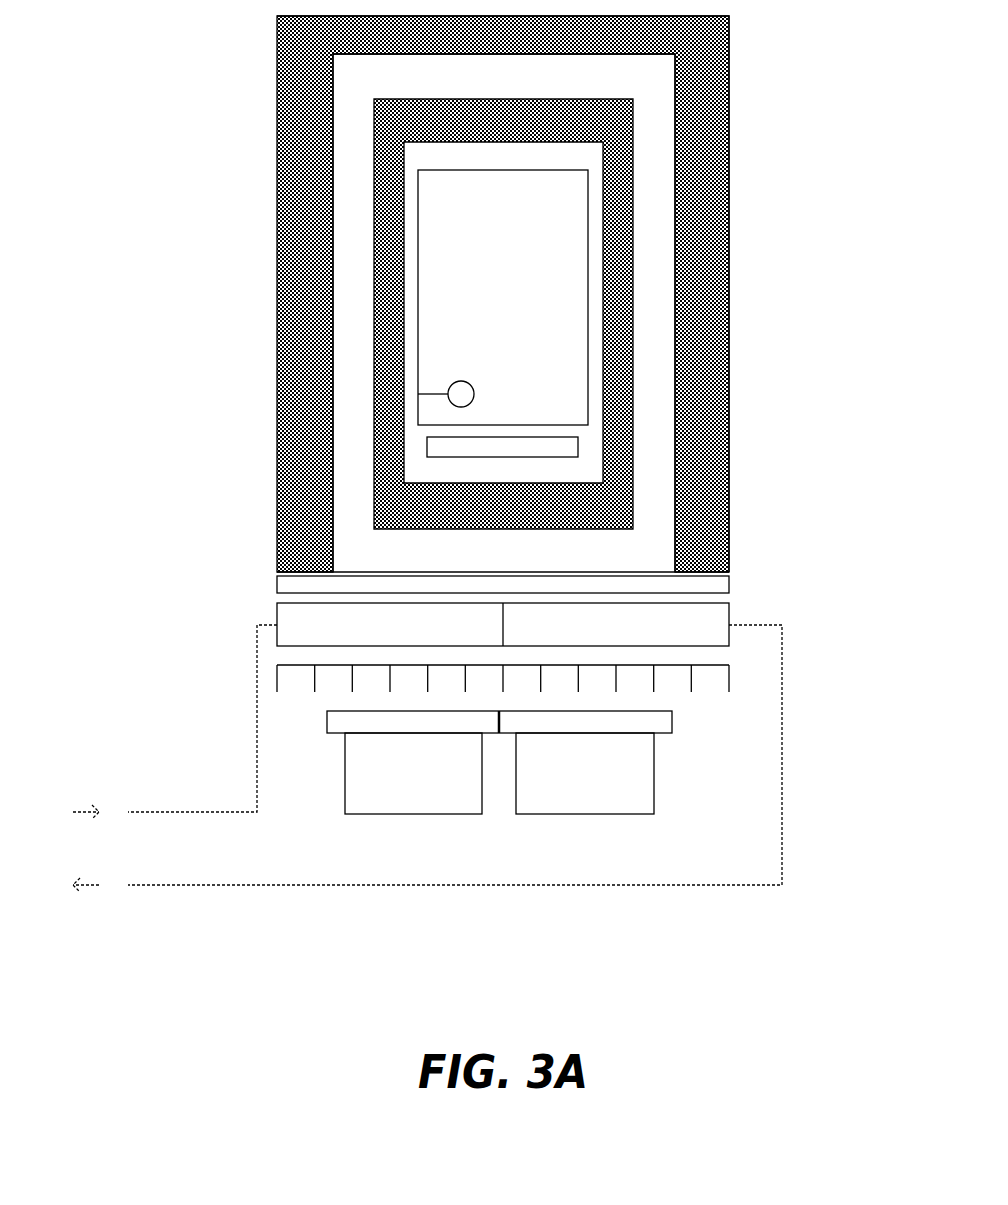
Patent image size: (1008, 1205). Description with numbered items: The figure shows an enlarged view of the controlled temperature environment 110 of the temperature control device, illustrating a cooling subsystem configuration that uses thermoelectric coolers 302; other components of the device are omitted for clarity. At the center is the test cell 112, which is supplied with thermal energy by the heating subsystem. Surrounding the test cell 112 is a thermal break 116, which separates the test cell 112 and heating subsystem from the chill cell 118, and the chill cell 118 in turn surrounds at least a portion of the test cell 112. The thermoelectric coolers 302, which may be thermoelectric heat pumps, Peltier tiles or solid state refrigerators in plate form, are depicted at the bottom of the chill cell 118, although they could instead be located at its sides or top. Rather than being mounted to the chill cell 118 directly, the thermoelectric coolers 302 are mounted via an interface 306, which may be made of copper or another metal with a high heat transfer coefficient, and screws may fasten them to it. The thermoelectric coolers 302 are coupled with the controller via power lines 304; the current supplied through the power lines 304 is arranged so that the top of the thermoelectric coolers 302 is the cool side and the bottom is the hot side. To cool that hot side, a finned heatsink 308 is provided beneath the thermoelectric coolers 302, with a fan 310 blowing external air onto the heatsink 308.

The controlled temperature environment 110 is at (474, 294).
The test cell 112 is at (569, 239).
The thermal break 116 is at (617, 348).
The chill cell 118 is at (662, 444).
The thermoelectric coolers 302 is at (729, 612).
The power lines 304 is at (233, 812).
The interface 306 is at (277, 587).
The finned heatsink 308 is at (729, 678).
The fan 310 is at (655, 782).